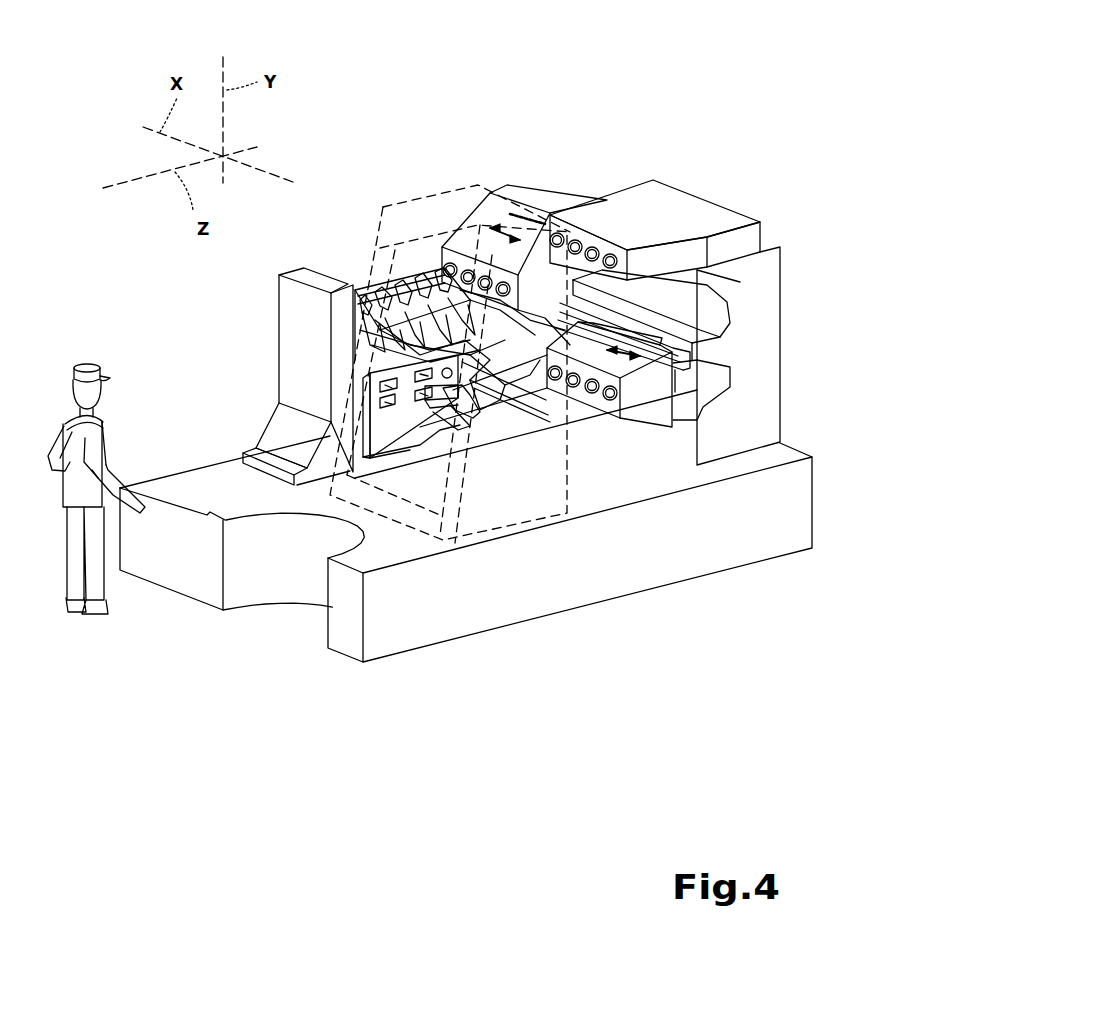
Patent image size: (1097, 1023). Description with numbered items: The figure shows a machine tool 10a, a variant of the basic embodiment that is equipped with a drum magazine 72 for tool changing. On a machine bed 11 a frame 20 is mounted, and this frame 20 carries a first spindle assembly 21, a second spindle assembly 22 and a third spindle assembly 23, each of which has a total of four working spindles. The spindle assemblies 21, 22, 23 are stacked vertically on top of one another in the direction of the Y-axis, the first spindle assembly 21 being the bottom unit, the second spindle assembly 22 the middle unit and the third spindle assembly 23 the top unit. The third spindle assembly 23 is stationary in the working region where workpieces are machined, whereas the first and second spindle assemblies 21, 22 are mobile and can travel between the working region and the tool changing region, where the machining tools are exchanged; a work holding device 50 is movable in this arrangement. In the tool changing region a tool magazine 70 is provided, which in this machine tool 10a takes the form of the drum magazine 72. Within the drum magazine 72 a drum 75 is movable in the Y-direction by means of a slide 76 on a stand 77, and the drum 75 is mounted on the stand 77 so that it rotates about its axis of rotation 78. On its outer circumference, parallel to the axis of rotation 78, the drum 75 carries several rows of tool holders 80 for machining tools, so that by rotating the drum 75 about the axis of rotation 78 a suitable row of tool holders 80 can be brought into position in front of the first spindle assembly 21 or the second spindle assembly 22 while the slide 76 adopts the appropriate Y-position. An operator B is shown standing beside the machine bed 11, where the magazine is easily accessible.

The machine tool 10a is at (757, 125).
The machine bed 11 is at (797, 502).
The frame 20 is at (783, 318).
The first spindle assembly 21 is at (658, 415).
The second spindle assembly 22 is at (465, 230).
The third spindle assembly 23 is at (690, 203).
The work holding device 50 is at (525, 512).
The tool magazine 70 is at (282, 328).
The drum magazine 72 is at (363, 272).
The drum 75 is at (428, 430).
The slide 76 is at (390, 440).
The stand 77 is at (285, 380).
The axis of rotation 78 is at (525, 398).
The tool holders 80 is at (385, 277).
The operator B is at (80, 615).